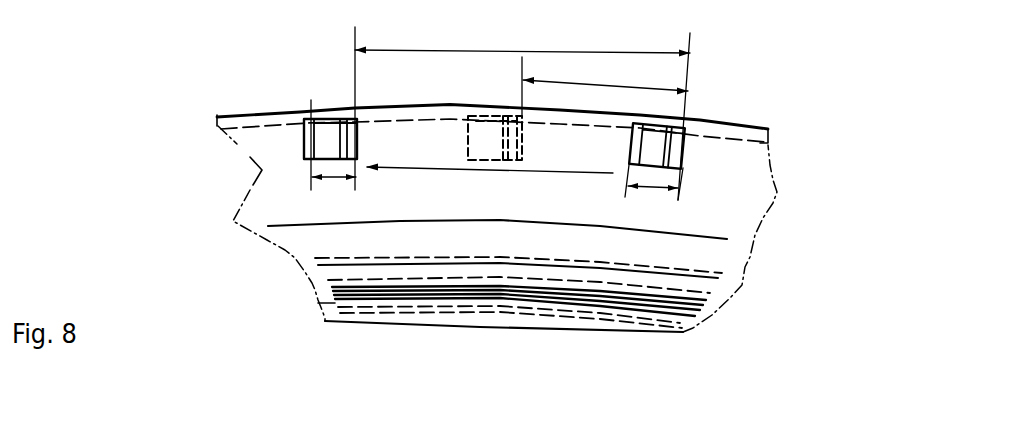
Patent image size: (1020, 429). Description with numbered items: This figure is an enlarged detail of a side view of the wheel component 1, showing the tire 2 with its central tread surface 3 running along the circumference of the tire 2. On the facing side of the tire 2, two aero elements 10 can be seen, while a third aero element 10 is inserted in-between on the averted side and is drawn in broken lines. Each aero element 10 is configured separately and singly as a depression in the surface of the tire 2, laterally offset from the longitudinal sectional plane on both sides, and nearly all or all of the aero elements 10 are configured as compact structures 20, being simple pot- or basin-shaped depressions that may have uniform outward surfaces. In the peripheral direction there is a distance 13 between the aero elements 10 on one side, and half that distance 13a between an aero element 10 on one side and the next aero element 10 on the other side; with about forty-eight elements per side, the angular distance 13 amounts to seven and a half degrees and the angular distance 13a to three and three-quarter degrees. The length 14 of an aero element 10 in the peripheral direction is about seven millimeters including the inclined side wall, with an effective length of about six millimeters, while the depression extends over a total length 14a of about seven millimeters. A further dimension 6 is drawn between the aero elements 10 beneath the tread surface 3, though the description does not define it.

The wheel component 1 is at (190, 90).
The tire 2 is at (751, 178).
The tread surface 3 is at (747, 117).
The distance 6 is at (452, 170).
The aero element 10 is at (328, 143).
The distance 13 is at (474, 47).
The half distance 13a is at (587, 83).
The length 14 is at (344, 179).
The total length 14a is at (662, 189).
The compact structure 20 is at (300, 139).